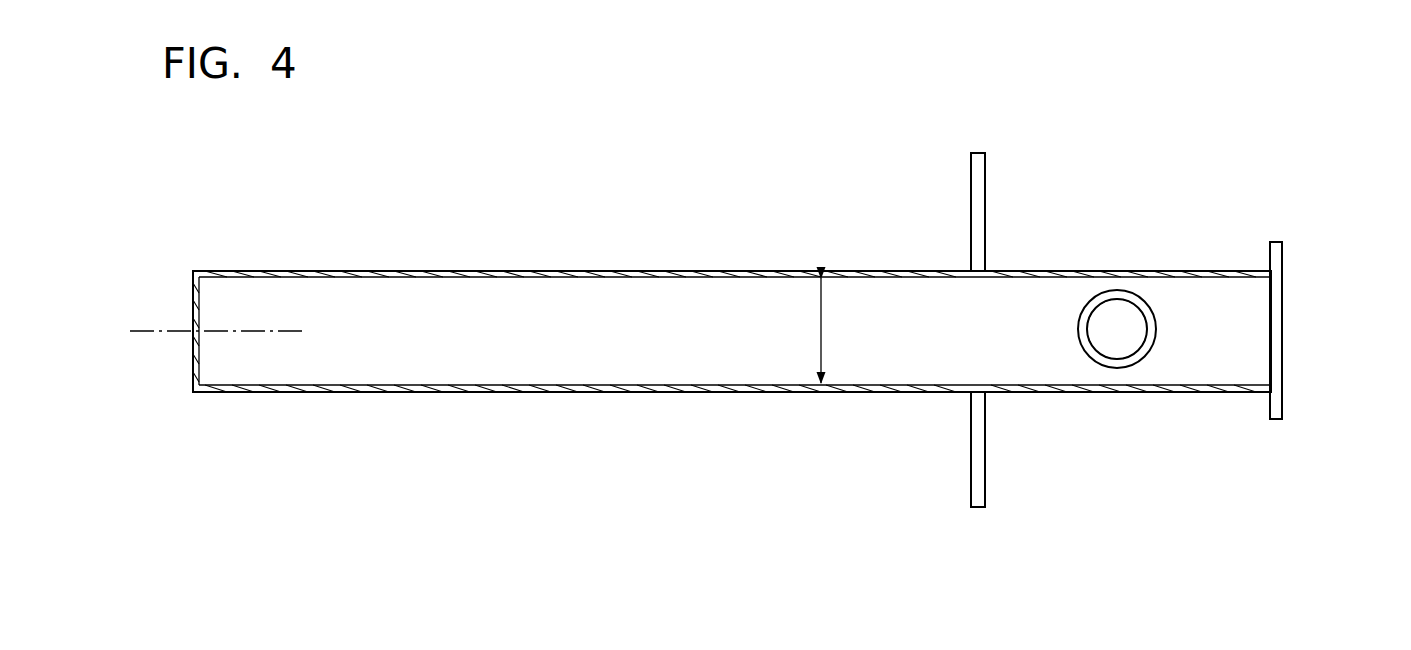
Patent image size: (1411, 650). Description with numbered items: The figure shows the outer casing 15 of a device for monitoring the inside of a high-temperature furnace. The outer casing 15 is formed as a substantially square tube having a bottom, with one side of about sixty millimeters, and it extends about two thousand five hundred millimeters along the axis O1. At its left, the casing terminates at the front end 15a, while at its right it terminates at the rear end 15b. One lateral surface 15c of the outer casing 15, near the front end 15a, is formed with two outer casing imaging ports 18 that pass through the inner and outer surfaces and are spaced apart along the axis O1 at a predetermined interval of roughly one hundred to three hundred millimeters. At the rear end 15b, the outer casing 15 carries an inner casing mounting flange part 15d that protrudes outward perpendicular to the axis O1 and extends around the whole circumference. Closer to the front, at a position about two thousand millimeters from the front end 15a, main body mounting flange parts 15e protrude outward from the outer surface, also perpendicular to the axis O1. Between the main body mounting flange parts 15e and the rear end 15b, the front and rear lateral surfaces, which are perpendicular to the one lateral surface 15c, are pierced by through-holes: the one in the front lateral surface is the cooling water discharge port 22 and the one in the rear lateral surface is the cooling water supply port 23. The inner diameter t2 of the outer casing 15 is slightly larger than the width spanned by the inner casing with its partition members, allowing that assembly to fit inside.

The outer casing 15 is at (1331, 127).
The front end 15a is at (192, 308).
The rear end 15b is at (1283, 332).
The one lateral surface 15c is at (665, 392).
The inner casing mounting flange part 15d is at (1274, 241).
The main body mounting flange parts 15e is at (985, 218).
The outer casing imaging ports 18 is at (388, 392).
The cooling water discharge port 22 is at (1145, 355).
The cooling water supply port 23 is at (1117, 329).
The axis O1 is at (196, 328).
The inner diameter t2 is at (836, 330).